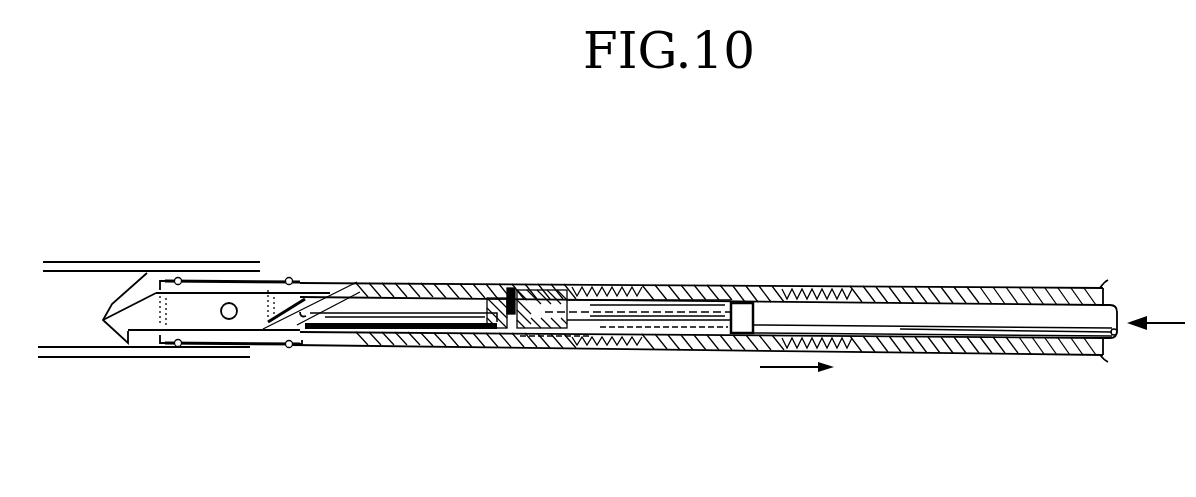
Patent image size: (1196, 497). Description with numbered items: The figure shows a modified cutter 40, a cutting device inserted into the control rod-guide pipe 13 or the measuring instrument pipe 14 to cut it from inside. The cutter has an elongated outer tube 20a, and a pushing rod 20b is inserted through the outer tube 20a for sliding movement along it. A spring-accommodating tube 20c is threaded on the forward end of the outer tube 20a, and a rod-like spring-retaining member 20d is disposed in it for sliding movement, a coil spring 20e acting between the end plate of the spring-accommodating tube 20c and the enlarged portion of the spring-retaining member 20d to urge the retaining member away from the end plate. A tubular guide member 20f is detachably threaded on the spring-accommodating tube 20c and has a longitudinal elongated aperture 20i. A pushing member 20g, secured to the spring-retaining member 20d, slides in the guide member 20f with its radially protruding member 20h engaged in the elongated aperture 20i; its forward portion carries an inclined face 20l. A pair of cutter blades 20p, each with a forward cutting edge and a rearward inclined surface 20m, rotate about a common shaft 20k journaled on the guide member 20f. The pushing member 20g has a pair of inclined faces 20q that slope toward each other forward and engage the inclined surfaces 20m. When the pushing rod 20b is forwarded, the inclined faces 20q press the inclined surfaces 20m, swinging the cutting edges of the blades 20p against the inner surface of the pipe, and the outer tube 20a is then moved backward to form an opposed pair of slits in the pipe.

The control rod-guide pipe 13 is at (107, 262).
The measuring instrument pipe 14 is at (107, 262).
The outer tube 20a is at (977, 285).
The pushing rod 20b is at (880, 318).
The spring-accommodating tube 20c is at (690, 352).
The spring-retaining member 20d is at (675, 300).
The coil spring 20e is at (586, 290).
The tubular guide member 20f is at (265, 290).
The pushing member 20g is at (398, 298).
The protruding member 20h is at (512, 288).
The elongated aperture 20i is at (448, 298).
The shaft 20k is at (229, 303).
The inclined face 20l is at (300, 312).
The inclined surface 20m is at (340, 286).
The cutter blade 20p is at (145, 276).
The inclined face 20q is at (310, 346).
The modified cutter 40 is at (648, 245).